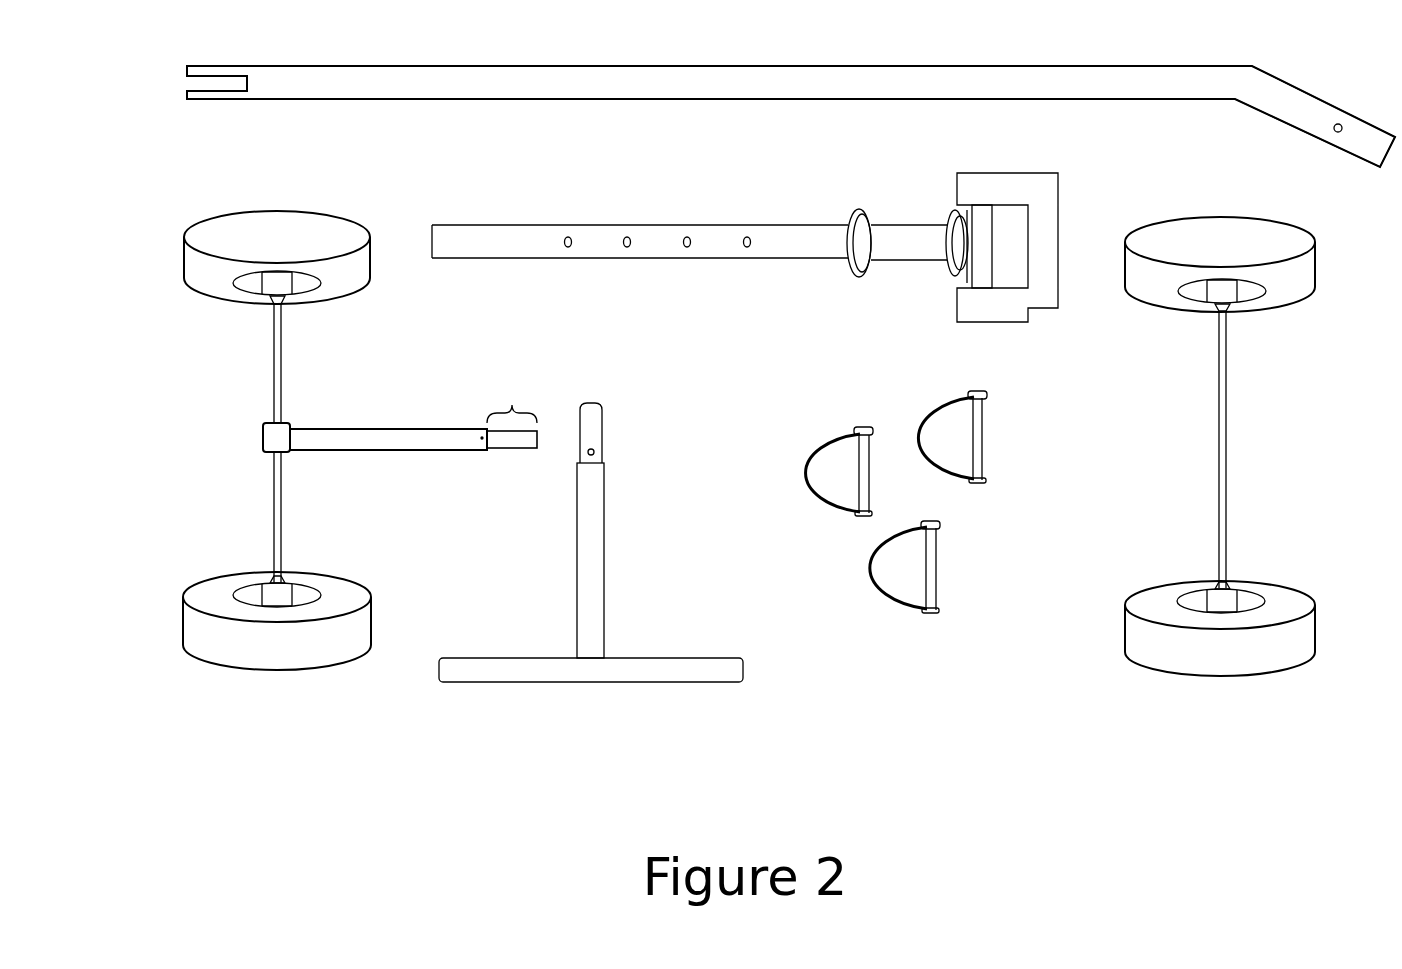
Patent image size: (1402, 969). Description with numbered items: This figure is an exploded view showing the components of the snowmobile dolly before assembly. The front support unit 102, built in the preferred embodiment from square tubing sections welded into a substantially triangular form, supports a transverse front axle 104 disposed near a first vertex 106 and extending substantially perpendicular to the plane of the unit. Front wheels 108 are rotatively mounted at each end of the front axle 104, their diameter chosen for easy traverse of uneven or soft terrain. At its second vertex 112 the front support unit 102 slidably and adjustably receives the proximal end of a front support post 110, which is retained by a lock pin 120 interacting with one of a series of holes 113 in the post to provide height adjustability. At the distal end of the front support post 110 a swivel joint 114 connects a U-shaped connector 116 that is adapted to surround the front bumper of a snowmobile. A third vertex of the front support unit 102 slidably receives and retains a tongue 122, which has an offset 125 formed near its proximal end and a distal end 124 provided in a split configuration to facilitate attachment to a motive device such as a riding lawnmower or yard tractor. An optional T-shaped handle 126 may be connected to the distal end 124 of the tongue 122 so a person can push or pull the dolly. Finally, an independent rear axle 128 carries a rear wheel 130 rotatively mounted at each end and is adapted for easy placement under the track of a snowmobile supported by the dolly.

The front support unit 102 is at (409, 452).
The front axle 104 is at (275, 497).
The first vertex 106 is at (283, 423).
The front wheels 108 is at (192, 256).
The front support post 110 is at (504, 248).
The second vertex 112 is at (532, 450).
The series of holes 113 is at (512, 397).
The swivel joint 114 is at (862, 268).
The U-shaped connector 116 is at (1045, 297).
The lock pin 120 is at (931, 600).
The tongue 122 is at (727, 88).
The distal end 124 is at (186, 98).
The offset 125 is at (1236, 92).
The T-shaped handle 126 is at (595, 550).
The independent rear axle 128 is at (1228, 443).
The rear wheel 130 is at (1222, 660).